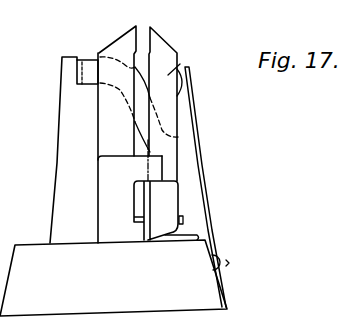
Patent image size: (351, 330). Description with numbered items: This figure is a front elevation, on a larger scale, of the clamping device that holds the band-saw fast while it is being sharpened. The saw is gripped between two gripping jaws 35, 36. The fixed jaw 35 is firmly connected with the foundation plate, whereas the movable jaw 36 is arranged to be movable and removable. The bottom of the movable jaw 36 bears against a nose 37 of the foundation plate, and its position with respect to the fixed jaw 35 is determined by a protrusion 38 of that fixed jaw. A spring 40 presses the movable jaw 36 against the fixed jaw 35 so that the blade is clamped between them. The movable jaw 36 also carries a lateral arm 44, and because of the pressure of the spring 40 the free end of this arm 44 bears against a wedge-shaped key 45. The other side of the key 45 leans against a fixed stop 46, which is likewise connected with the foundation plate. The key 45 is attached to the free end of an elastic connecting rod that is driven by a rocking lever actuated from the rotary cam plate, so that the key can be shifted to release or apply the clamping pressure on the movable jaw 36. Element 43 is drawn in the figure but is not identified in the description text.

The fixed gripping jaw 35 is at (130, 93).
The movable gripping jaw 36 is at (170, 72).
The nose 37 is at (192, 235).
The protrusion 38 is at (155, 172).
The spring 40 is at (200, 133).
The block 43 is at (185, 218).
The lateral arm 44 is at (138, 108).
The wedge-shaped key 45 is at (85, 67).
The fixed stop 46 is at (68, 68).